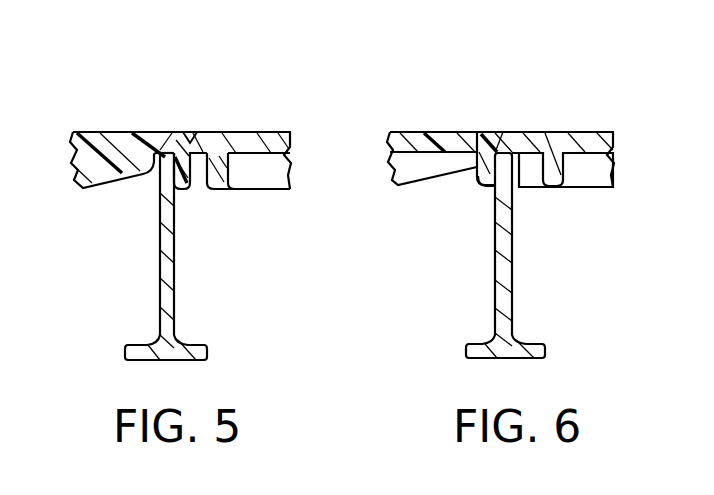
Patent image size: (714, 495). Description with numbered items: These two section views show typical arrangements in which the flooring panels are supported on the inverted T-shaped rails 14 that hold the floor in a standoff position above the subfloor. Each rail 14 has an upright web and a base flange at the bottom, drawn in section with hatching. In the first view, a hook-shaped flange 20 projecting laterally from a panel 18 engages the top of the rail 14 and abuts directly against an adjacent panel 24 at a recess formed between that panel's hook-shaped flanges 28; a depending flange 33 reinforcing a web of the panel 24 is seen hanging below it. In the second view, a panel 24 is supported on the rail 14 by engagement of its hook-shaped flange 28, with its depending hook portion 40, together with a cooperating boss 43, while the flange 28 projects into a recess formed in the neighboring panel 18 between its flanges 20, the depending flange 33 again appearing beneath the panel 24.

In FIG. 5, the rail 14 is at (175, 278).
In FIG. 6, the rail 14 is at (513, 278).
In FIG. 5, the panel 18 is at (124, 126).
In FIG. 6, the panel 18 is at (427, 126).
In FIG. 5, the hooked shaped flange 20 is at (185, 132).
In FIG. 5, the panel 24 is at (256, 124).
In FIG. 6, the panel 24 is at (566, 123).
In FIG. 6, the hook shaped flange 28 is at (478, 133).
In FIG. 5, the depending flange 33 is at (227, 185).
In FIG. 6, the depending flange 33 is at (562, 178).
In FIG. 6, the depending hook portion 40 is at (483, 188).
In FIG. 6, the boss 43 is at (523, 187).